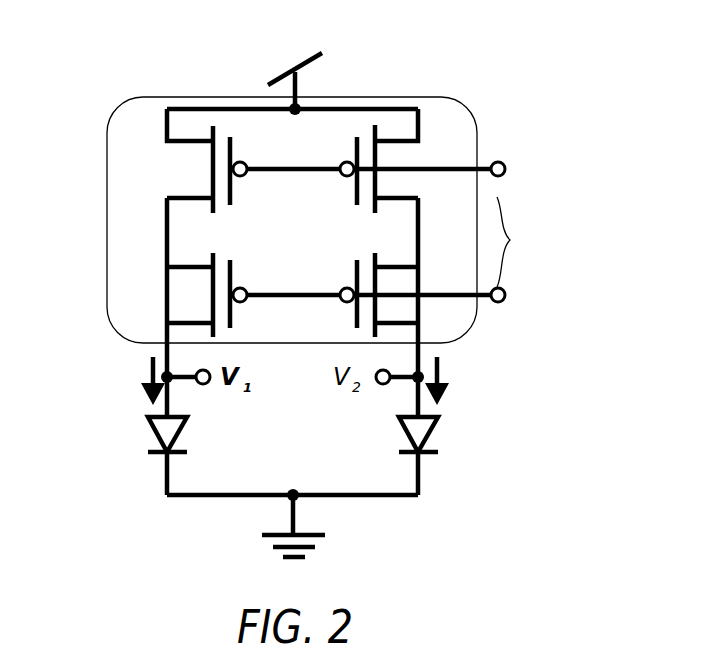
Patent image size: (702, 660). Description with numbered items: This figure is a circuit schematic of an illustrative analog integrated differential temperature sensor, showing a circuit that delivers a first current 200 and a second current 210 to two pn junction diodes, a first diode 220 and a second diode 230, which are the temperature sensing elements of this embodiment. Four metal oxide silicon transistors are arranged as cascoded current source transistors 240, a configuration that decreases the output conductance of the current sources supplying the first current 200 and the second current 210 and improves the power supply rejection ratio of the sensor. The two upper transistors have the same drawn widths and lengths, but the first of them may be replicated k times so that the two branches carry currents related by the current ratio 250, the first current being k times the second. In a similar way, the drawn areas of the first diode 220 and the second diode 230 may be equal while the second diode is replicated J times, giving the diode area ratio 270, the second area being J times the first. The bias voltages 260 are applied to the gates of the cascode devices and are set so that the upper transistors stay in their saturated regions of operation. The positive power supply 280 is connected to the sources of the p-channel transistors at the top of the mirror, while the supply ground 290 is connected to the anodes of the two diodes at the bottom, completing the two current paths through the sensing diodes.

The current I1 200 is at (100, 367).
The current I2 210 is at (480, 368).
The junction diode D1 220 is at (100, 431).
The junction diode D2 230 is at (480, 421).
The cascoded current source transistors 240 is at (465, 107).
The current ratio 250 is at (260, 223).
The bias voltages Vbp1 and Vbp2 260 is at (532, 242).
The area ratio 270 is at (293, 468).
The positive power supply Vdd 280 is at (260, 37).
The supply ground 290 is at (327, 543).